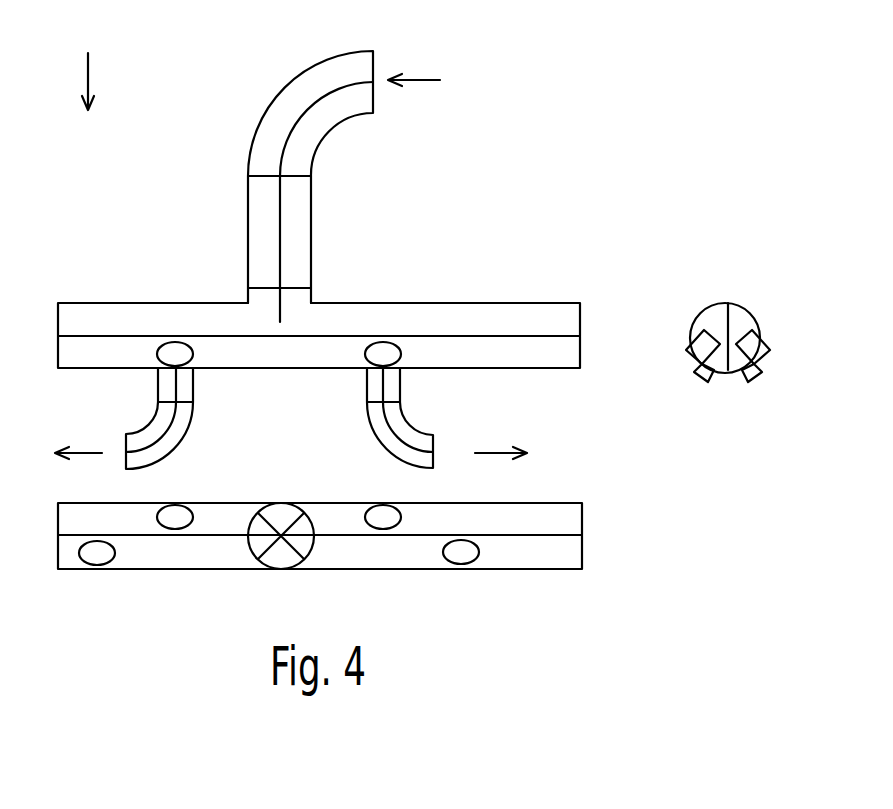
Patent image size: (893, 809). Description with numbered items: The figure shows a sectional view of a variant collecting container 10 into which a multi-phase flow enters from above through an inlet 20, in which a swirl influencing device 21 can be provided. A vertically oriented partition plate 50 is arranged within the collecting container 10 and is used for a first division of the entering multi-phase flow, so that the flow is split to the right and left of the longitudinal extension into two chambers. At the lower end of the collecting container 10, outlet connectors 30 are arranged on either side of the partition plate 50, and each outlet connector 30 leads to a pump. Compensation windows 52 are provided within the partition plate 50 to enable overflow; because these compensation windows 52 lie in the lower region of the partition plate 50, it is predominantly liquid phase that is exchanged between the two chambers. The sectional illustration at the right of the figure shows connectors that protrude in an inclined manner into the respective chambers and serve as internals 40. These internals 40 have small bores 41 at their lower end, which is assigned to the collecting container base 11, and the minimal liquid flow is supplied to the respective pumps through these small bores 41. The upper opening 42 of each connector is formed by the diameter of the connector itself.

The collecting container 10 is at (84, 299).
The collecting container base 11 is at (276, 413).
The inlet 20 is at (243, 151).
The swirl influencing device 21 is at (291, 225).
The outlet connectors 30 is at (372, 443).
The internals 40 is at (700, 323).
The small bores 41 is at (725, 367).
The upper opening 42 is at (755, 331).
The partition plate 50 is at (543, 343).
The compensation windows 52 is at (166, 343).